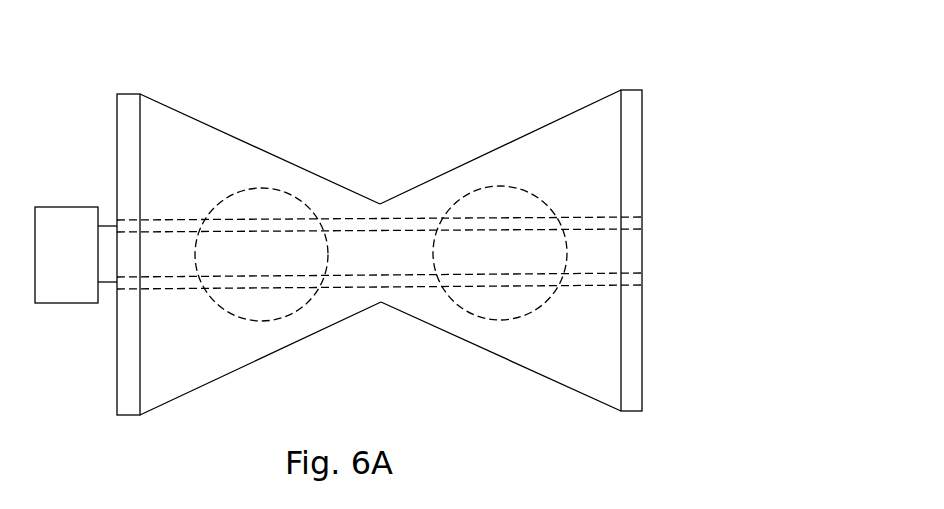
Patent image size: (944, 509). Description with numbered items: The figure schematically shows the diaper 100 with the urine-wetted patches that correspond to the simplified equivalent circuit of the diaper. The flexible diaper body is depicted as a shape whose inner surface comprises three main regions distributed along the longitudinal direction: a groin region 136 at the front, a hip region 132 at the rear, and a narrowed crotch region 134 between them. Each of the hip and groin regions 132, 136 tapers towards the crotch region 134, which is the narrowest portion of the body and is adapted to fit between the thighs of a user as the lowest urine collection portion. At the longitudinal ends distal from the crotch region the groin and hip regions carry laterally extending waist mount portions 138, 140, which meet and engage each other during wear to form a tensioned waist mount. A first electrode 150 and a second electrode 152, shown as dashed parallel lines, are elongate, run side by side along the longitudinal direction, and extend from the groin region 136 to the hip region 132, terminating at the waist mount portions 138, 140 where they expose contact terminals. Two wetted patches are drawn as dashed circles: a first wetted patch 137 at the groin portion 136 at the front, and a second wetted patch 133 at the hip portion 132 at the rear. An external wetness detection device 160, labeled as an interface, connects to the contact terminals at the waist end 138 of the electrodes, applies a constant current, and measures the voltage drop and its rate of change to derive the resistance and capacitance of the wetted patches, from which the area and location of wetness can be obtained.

The diaper 100 is at (578, 40).
The hip region 132 is at (500, 250).
The second wetted patch 133 is at (512, 186).
The crotch region 134 is at (381, 253).
The groin region 136 is at (260, 254).
The first wetted patch 137 is at (254, 188).
The waist mount portion 138 is at (126, 108).
The waist mount portion 140 is at (631, 401).
The first electrode 150 is at (148, 222).
The second electrode 152 is at (149, 282).
The external wetness detection device 160 is at (63, 282).